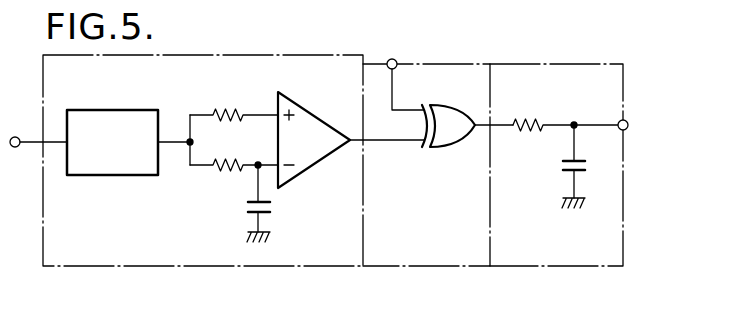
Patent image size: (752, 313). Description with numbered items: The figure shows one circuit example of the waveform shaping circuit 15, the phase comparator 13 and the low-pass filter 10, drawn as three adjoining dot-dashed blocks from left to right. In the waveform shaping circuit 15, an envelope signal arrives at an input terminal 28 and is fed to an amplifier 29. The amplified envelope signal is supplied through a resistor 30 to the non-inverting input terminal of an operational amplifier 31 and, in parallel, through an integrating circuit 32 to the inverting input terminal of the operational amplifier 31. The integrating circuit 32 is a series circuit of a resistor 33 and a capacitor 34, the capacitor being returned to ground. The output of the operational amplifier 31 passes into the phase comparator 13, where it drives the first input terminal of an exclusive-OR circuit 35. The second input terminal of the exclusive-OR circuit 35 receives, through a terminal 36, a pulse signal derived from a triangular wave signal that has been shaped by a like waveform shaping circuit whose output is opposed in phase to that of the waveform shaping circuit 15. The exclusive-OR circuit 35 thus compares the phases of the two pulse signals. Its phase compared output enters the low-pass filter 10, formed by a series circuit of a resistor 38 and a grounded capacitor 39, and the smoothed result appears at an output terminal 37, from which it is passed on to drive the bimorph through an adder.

The low-pass filter 10 is at (559, 63).
The phase comparator 13 is at (438, 63).
The waveform shaping circuit 15 is at (196, 56).
The input terminal 28 is at (15, 148).
The amplifier 29 is at (127, 175).
The resistor 30 is at (229, 112).
The operational amplifier 31 is at (313, 113).
The integrating circuit 32 is at (224, 201).
The resistor 33 is at (224, 180).
The capacitor 34 is at (271, 212).
The exclusive-OR circuit 35 is at (448, 150).
The terminal 36 is at (393, 59).
The output terminal 37 is at (627, 129).
The resistor 38 is at (522, 112).
The capacitor 39 is at (563, 171).